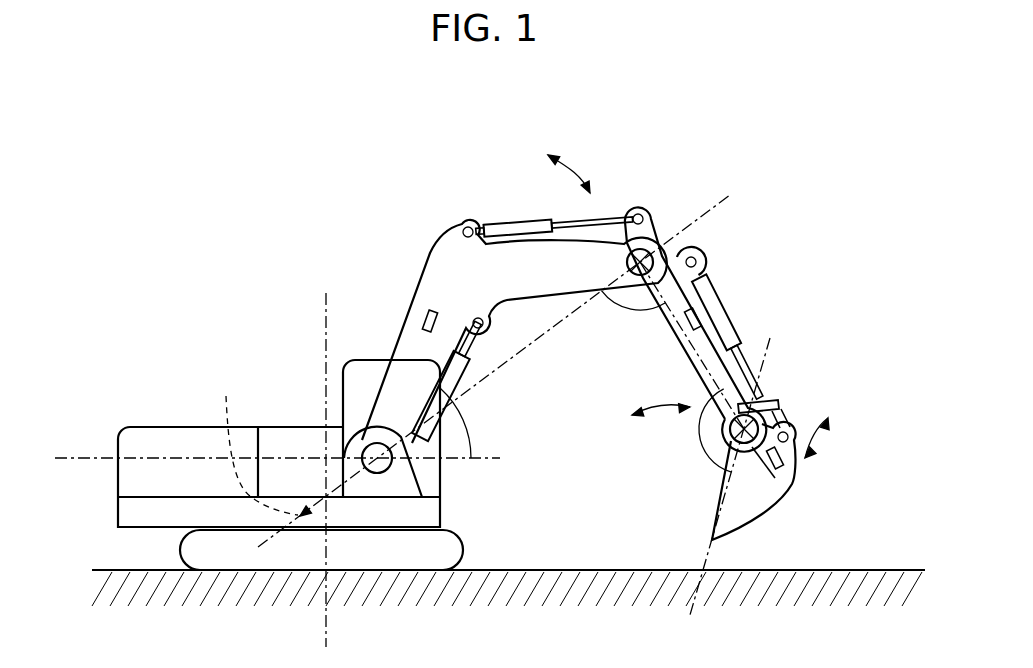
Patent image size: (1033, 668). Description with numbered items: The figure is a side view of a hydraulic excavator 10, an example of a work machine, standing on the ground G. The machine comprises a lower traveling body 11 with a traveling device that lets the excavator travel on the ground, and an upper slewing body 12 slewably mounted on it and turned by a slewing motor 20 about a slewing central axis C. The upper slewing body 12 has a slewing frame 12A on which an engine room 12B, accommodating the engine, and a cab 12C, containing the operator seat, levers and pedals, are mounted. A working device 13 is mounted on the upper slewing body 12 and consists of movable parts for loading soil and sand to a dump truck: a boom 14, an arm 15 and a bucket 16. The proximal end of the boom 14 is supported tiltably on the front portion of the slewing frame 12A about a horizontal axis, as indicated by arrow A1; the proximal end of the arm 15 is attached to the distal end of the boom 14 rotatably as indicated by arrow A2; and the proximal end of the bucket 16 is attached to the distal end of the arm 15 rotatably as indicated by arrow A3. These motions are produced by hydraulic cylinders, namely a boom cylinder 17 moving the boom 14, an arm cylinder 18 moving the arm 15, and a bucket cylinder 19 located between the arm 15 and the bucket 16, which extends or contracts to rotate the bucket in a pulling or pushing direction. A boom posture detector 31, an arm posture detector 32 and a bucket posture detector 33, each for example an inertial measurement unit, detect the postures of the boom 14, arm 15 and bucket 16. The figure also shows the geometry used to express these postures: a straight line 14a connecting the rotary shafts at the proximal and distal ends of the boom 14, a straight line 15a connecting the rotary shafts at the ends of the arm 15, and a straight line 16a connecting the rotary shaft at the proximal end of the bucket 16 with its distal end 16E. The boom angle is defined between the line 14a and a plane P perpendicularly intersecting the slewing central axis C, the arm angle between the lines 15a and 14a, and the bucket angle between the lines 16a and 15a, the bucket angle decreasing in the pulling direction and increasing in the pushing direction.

The hydraulic excavator 10 is at (266, 178).
The lower traveling body 11 is at (478, 532).
The upper slewing body 12 is at (277, 394).
The slewing frame 12A is at (309, 540).
The engine room 12B is at (166, 437).
The cab 12C is at (342, 382).
The working device 13 is at (426, 210).
The boom 14 is at (507, 331).
The straight line representing the direction of the boom 14a is at (553, 330).
The arm 15 is at (702, 329).
The straight line representing the direction of the arm 15a is at (747, 342).
The bucket 16 is at (738, 476).
The straight line representing the direction of the bucket 16a is at (719, 483).
The distal end of the bucket 16E is at (710, 540).
The boom cylinder 17 is at (443, 417).
The arm cylinder 18 is at (516, 223).
The bucket cylinder 19 is at (722, 314).
The slewing motor 20 is at (256, 443).
The boom posture detector 31 is at (421, 322).
The arm posture detector 32 is at (712, 297).
The bucket posture detector 33 is at (792, 477).
The arrow indicating boom rotation A1 is at (578, 170).
The arrow indicating arm rotation A2 is at (661, 405).
The arrow indicating bucket rotation A3 is at (820, 444).
The slewing central axis C is at (328, 632).
The ground G is at (866, 562).
The plane P is at (85, 458).